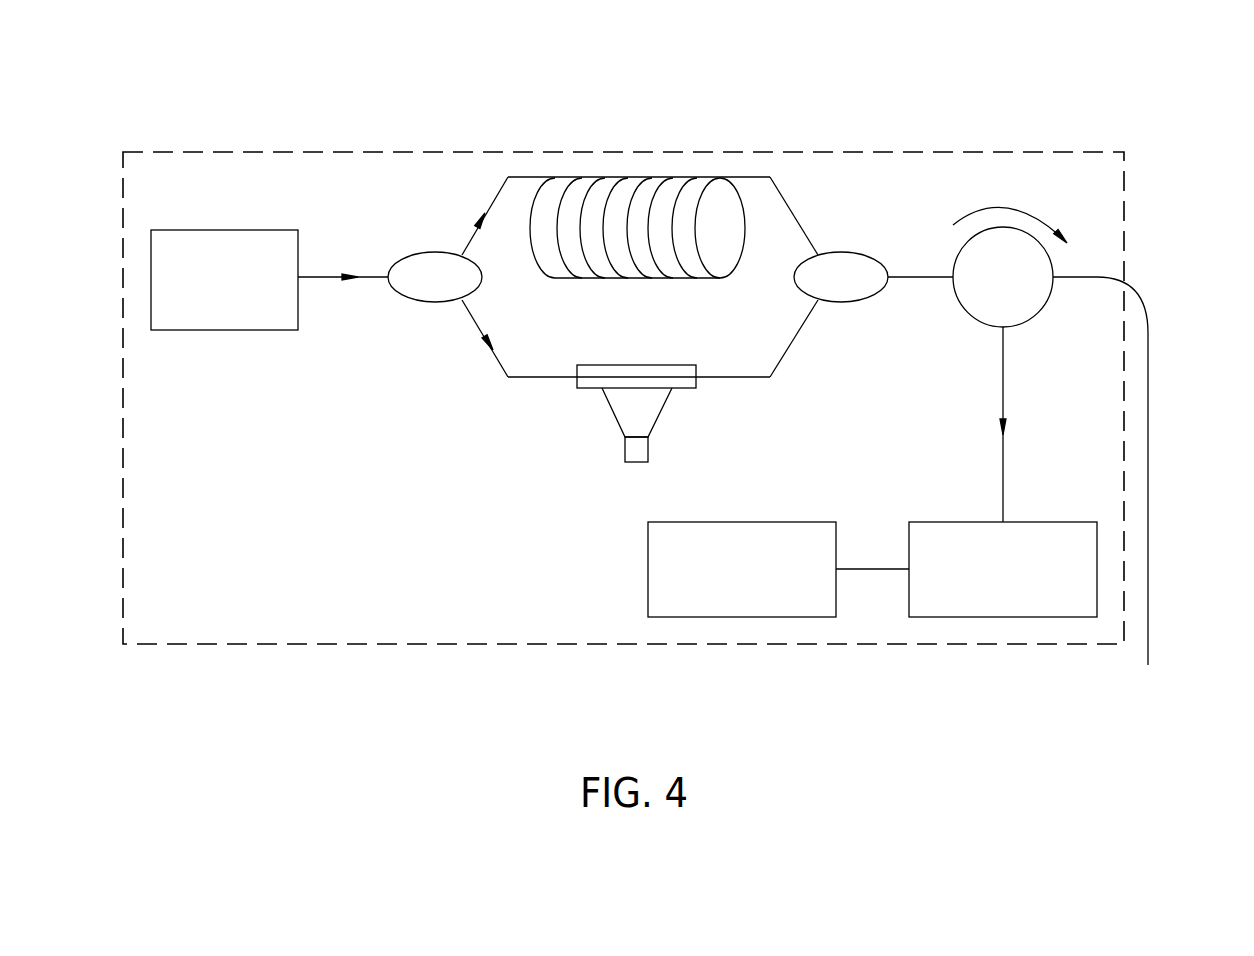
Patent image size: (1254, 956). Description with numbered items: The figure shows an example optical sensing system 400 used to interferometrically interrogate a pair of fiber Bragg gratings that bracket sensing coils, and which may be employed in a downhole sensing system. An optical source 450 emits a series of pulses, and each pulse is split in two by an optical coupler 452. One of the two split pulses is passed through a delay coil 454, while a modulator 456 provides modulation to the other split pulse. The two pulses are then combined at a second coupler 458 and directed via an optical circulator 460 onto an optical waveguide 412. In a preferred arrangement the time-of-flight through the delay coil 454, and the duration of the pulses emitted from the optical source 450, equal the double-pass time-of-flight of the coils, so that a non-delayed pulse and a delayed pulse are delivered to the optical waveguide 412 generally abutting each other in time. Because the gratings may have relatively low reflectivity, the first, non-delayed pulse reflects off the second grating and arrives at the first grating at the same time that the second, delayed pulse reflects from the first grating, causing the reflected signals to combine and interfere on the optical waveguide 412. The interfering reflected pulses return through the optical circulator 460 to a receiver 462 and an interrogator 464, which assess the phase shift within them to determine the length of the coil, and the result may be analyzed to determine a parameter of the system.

The optical sensing system 400 is at (412, 94).
The optical waveguide 412 is at (1135, 295).
The optical source 450 is at (228, 330).
The optical coupler 452 is at (412, 302).
The delay coil 454 is at (677, 177).
The modulator 456 is at (613, 417).
The coupler 458 is at (840, 303).
The optical circulator 460 is at (942, 520).
The receiver 462 is at (968, 313).
The interrogator 464 is at (752, 520).